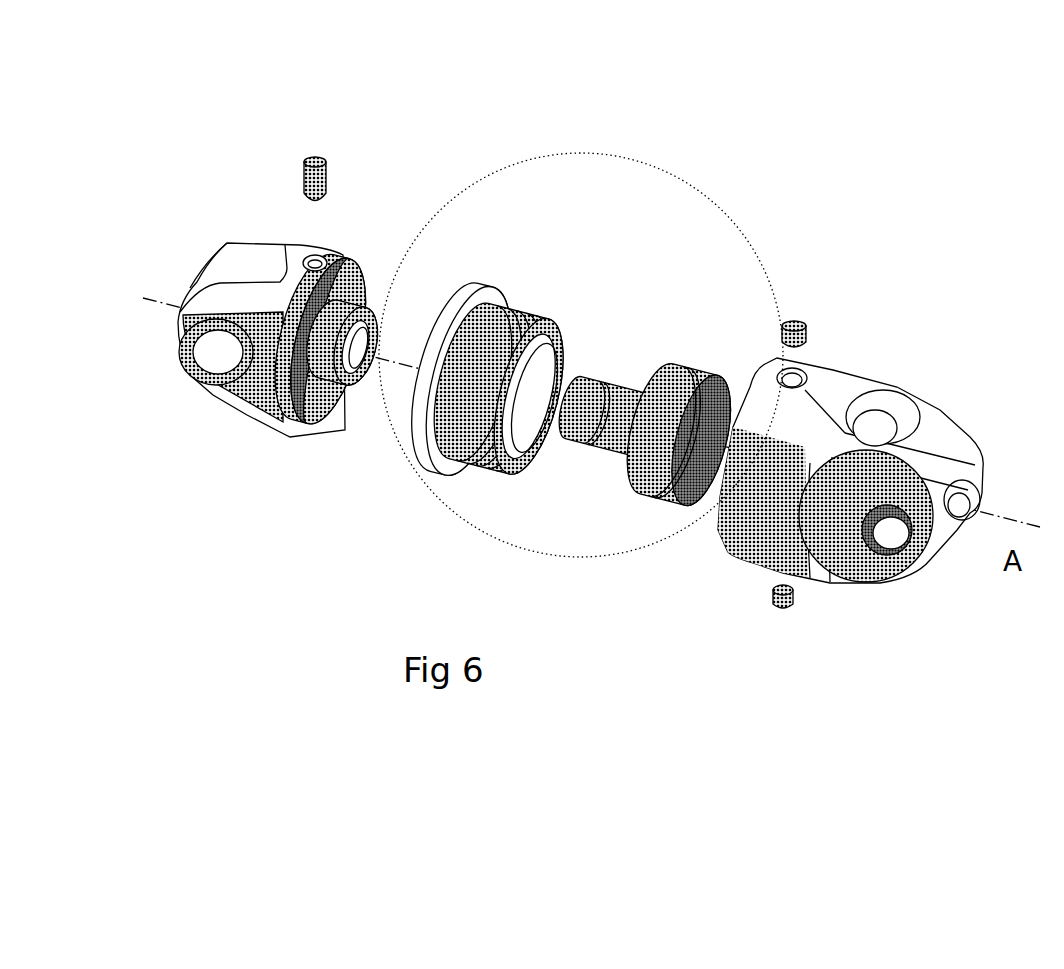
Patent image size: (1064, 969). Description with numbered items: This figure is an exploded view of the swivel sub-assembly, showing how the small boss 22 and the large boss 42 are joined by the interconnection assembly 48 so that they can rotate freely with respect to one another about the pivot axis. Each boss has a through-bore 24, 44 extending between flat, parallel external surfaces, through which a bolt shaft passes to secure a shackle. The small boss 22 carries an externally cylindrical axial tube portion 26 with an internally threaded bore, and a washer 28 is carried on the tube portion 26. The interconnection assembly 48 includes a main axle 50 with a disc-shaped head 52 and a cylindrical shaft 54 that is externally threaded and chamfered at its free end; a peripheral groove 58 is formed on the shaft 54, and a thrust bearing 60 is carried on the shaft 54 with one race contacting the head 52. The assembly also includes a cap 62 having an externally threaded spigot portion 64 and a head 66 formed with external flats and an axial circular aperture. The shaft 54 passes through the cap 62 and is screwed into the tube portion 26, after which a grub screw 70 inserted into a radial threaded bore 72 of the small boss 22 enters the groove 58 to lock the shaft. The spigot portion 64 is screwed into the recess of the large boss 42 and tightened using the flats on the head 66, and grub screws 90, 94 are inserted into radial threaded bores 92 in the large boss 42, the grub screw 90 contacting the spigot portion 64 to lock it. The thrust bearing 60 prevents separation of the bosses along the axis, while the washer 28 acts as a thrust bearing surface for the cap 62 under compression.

The small boss 22 is at (307, 328).
The through-bore 24 is at (220, 348).
The axial tube portion 26 is at (373, 300).
The washer 28 is at (320, 427).
The large boss 42 is at (850, 486).
The through-bore 44 is at (886, 524).
The interconnection assembly 48 is at (668, 172).
The main axle 50 is at (658, 418).
The disc-shaped head 52 is at (725, 360).
The cylindrical shaft 54 is at (651, 376).
The peripheral groove 58 is at (597, 455).
The thrust bearing 60 is at (647, 503).
The cap 62 is at (483, 379).
The spigot portion 64 is at (490, 473).
The head 66 is at (428, 473).
The grub screw 70 is at (312, 157).
The radial threaded bore 72 is at (345, 220).
The grub screw 90 is at (792, 318).
The radial threaded bores 92 is at (805, 368).
The grub screw 94 is at (782, 610).